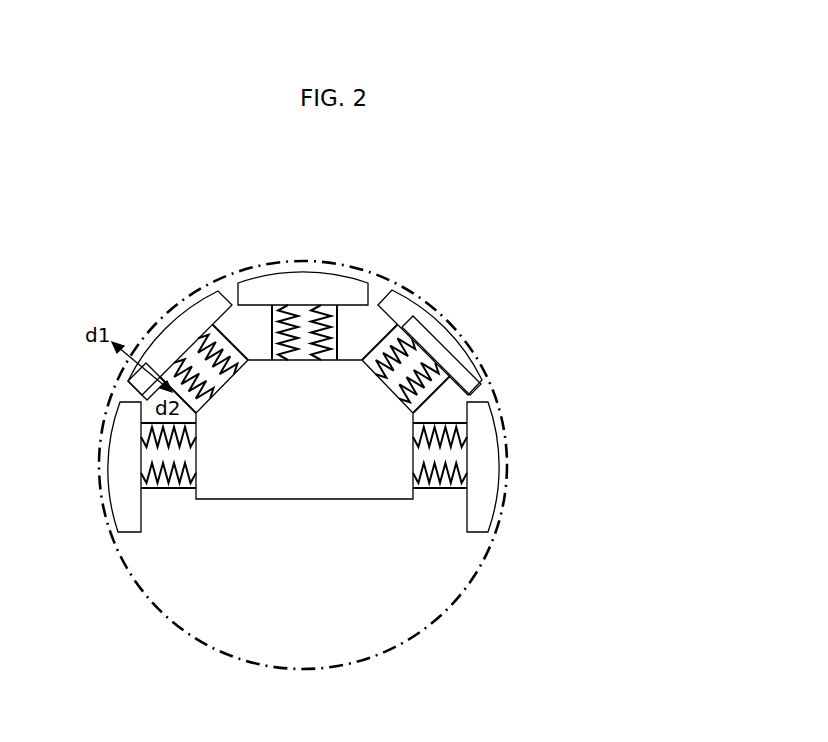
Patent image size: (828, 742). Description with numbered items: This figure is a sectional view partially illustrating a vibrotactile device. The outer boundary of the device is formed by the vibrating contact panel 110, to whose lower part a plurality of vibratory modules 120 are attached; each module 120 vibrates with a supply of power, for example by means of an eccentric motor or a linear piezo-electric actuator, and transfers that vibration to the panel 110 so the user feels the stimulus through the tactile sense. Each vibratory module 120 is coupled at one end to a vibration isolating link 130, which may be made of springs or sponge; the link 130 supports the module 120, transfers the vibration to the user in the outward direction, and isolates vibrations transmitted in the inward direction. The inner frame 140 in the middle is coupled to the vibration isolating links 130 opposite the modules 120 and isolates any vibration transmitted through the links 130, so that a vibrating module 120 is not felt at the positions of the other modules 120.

The vibrating contact panel 110 is at (463, 345).
The vibratory module 120 is at (443, 353).
The vibration isolating link 130 is at (423, 382).
The inner frame 140 is at (250, 485).